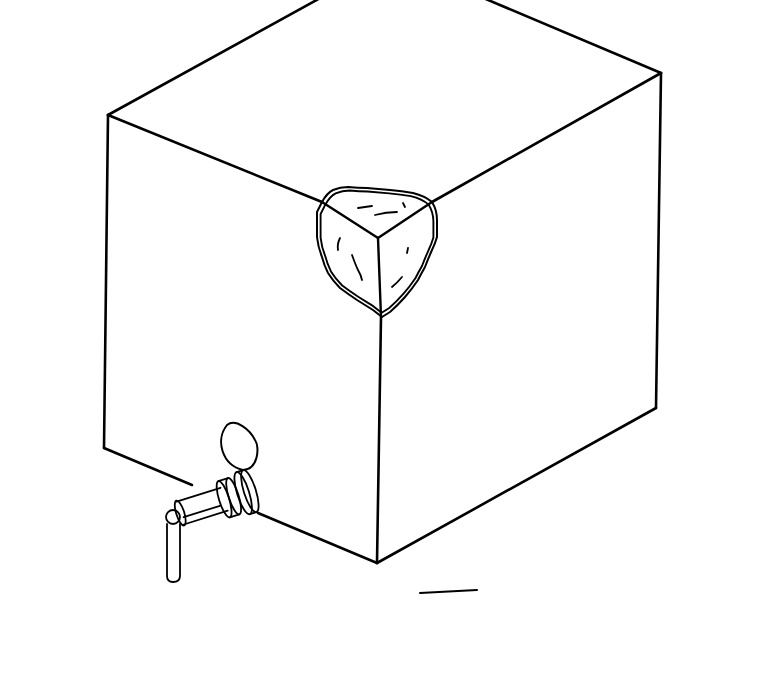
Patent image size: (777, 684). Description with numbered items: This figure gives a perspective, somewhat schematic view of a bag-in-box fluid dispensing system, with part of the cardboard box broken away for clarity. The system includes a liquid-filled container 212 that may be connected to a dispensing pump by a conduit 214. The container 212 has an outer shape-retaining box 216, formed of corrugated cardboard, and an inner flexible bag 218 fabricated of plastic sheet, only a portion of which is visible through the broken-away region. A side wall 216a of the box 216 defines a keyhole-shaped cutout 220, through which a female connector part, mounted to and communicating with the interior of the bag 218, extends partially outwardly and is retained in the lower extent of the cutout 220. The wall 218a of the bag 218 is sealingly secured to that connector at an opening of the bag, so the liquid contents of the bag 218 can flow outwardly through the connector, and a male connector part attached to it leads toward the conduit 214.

The container 212 is at (652, 297).
The conduit 214 is at (133, 553).
The box 216 is at (110, 272).
The side wall 216a is at (107, 425).
The bag 218 is at (407, 260).
The wall of bag 218a is at (388, 202).
The keyhole-shaped cutout 220 is at (262, 444).